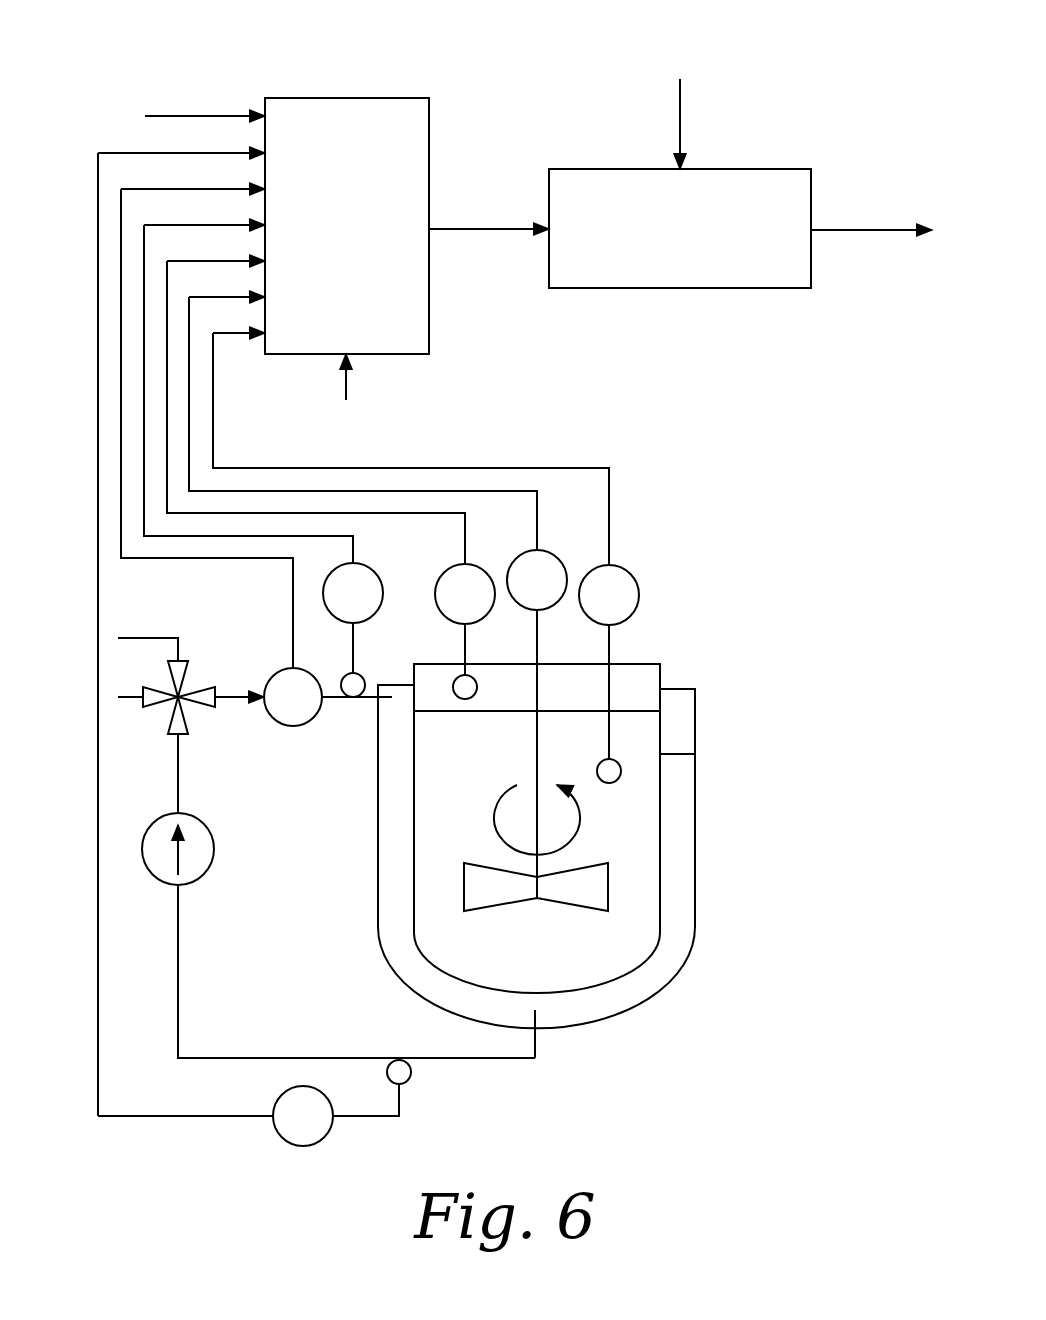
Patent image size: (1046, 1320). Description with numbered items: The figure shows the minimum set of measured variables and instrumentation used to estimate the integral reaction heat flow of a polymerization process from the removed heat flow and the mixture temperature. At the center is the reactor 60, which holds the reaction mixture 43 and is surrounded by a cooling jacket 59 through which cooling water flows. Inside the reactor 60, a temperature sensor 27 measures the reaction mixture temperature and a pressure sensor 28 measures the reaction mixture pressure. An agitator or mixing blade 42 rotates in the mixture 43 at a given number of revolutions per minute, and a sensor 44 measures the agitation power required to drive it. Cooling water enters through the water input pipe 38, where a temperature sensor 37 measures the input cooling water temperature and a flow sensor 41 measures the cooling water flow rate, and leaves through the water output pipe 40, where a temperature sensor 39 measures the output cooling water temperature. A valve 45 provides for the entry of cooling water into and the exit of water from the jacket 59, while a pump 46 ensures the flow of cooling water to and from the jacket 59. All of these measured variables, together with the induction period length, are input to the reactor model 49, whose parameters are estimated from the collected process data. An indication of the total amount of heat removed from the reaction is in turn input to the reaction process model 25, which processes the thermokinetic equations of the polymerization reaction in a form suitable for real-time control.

The reaction process model 25 is at (760, 169).
The temperature sensor 27 is at (621, 772).
The pressure sensor 28 is at (455, 697).
The temperature sensor 37 is at (365, 673).
The water input pipe 38 is at (367, 702).
The temperature sensor 39 is at (408, 1073).
The water output pipe 40 is at (247, 1057).
The flow sensor 41 is at (267, 712).
The agitator or mixing blade 42 is at (608, 898).
The mixture 43 is at (519, 977).
The sensor 44 is at (565, 563).
The valve 45 is at (188, 669).
The pump 46 is at (213, 828).
The reactor model 49 is at (362, 98).
The cooling jacket 59 is at (688, 860).
The reactor 60 is at (695, 754).